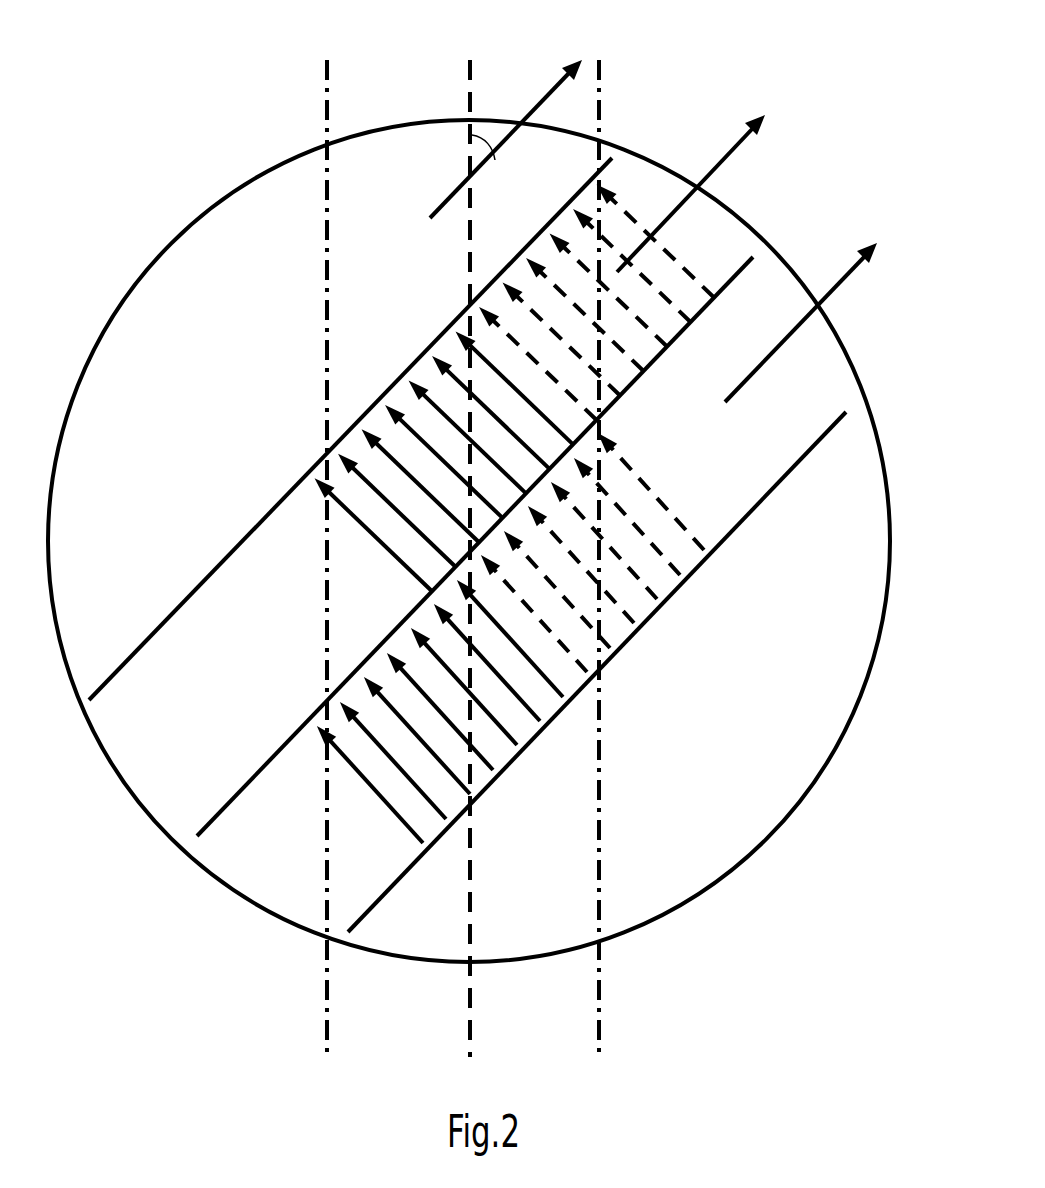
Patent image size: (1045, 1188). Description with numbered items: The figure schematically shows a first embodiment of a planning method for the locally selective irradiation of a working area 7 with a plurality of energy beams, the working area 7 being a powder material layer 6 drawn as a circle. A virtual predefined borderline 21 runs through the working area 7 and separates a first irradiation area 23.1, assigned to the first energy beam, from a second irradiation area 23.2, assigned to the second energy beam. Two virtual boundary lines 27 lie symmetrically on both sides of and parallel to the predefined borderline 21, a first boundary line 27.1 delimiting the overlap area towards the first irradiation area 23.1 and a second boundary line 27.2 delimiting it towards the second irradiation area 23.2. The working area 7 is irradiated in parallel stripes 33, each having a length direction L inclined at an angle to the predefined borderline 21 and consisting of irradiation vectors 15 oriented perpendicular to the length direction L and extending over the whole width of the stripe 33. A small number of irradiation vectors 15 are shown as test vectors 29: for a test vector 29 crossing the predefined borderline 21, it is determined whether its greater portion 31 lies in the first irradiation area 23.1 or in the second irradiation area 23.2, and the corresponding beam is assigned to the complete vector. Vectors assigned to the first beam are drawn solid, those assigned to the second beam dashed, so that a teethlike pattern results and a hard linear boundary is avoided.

The powder material layer 6 is at (489, 541).
The working area 7 is at (876, 739).
The irradiation vector 15 is at (475, 526).
The predefined borderline 21 is at (468, 70).
The first irradiation area 23.1 is at (217, 407).
The second irradiation area 23.2 is at (815, 617).
The boundary line 27 is at (467, 556).
The first boundary line 27.1 is at (326, 70).
The second boundary line 27.2 is at (600, 70).
The test vector 29 is at (452, 348).
The greater portion 31 is at (437, 422).
The stripe 33 is at (196, 540).
The length direction L is at (538, 100).